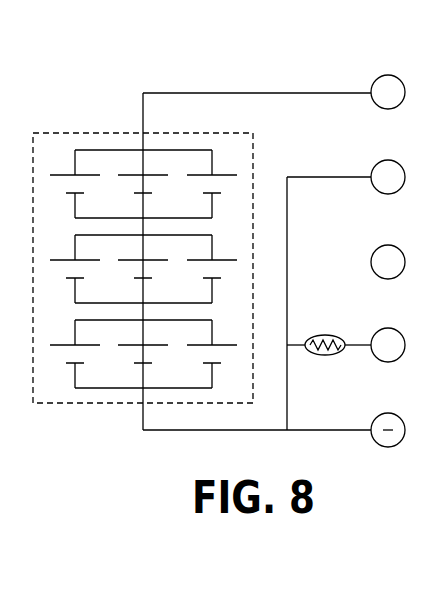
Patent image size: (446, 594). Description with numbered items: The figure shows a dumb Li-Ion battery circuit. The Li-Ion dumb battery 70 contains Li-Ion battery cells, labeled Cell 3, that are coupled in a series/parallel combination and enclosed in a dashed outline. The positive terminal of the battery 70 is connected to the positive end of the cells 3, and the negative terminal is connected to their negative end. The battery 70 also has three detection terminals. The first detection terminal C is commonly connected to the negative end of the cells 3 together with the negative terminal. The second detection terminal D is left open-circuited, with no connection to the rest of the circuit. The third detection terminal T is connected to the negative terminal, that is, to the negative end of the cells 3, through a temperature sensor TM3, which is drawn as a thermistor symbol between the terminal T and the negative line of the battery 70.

The Li-Ion dumb battery 70 is at (273, 56).
The Li-Ion battery cells (Cell3) 3 is at (143, 253).
The temperature sensor TM3 is at (324, 359).